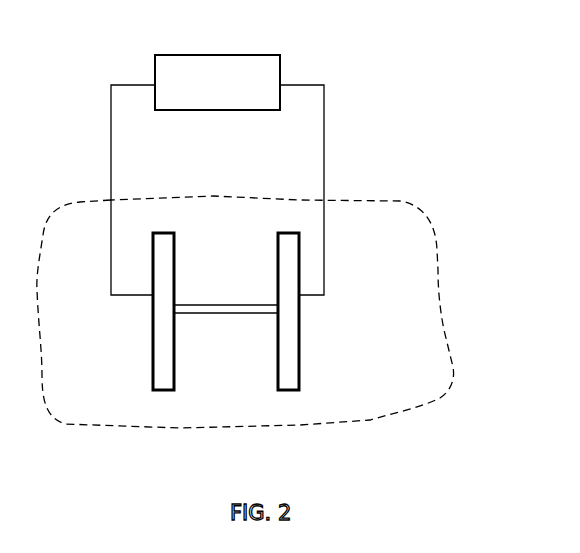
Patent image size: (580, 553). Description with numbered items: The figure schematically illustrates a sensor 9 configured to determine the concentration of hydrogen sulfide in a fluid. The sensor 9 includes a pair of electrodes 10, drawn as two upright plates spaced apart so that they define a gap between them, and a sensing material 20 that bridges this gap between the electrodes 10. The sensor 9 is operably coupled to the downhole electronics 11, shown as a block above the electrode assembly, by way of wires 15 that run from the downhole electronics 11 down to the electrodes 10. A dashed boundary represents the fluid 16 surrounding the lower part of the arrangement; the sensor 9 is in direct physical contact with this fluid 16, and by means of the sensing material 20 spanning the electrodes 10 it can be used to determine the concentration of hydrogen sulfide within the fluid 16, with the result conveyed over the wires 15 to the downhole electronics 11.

The sensor 9 is at (314, 350).
The electrodes 10 is at (299, 355).
The downhole electronics 11 is at (280, 58).
The wires 15 is at (324, 158).
The fluid 16 is at (438, 233).
The sensing material 20 is at (142, 317).